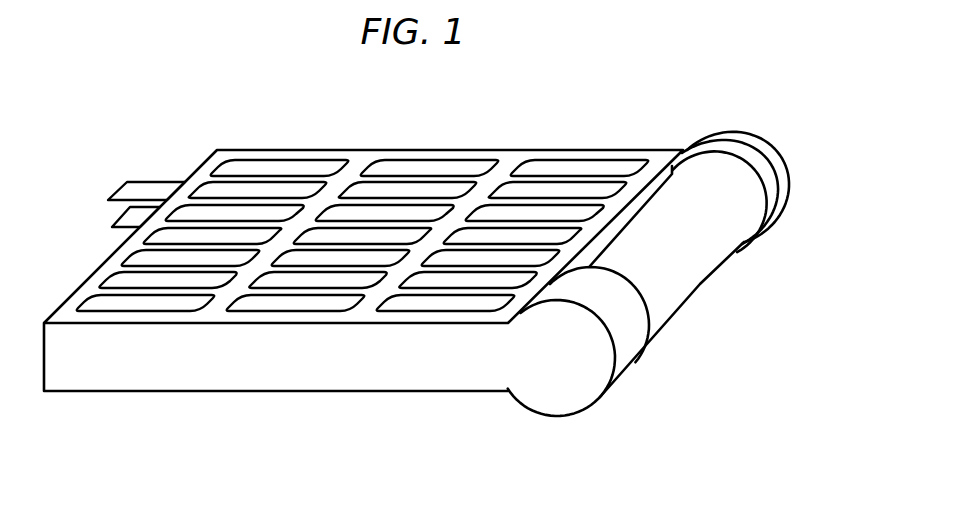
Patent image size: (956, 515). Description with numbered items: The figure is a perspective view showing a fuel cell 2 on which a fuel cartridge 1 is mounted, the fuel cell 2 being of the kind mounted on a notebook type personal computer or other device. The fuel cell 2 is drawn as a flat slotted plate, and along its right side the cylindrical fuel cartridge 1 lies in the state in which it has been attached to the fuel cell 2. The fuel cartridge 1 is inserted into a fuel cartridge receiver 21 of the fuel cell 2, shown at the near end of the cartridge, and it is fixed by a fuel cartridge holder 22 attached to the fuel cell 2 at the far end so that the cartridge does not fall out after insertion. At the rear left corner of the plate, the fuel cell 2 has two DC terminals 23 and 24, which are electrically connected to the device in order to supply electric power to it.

The fuel cartridge 1 is at (703, 283).
The fuel cell 2 is at (463, 150).
The fuel cartridge receiver 21 is at (628, 353).
The fuel cartridge holder 22 is at (773, 153).
The DC terminal 23 is at (143, 188).
The DC terminal 24 is at (128, 215).